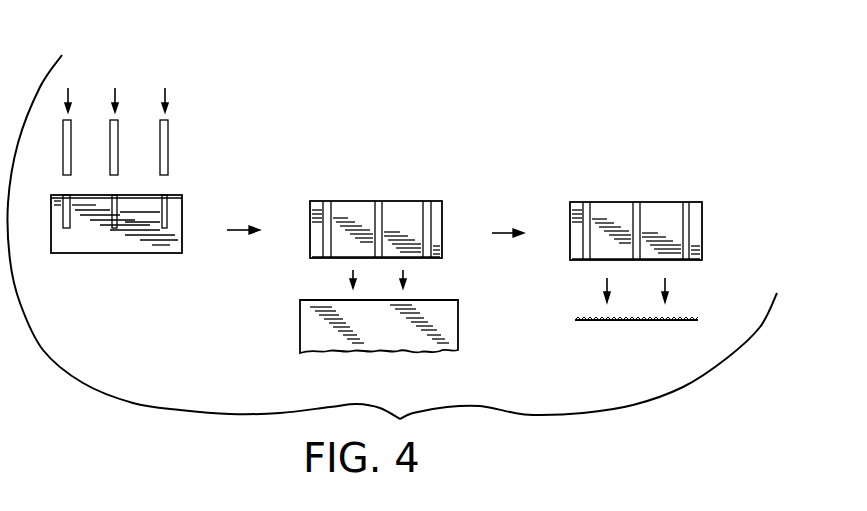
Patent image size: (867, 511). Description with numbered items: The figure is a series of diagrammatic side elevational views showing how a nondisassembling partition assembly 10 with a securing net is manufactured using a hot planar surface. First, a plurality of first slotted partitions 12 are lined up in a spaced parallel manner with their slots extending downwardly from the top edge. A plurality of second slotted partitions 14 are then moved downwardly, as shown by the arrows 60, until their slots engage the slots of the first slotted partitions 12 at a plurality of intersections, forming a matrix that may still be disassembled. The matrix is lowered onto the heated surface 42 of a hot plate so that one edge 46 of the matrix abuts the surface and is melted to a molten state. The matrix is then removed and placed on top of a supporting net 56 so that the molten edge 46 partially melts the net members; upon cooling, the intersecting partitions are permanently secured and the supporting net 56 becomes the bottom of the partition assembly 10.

The arrows 60 is at (158, 92).
The second slotted partitions 14 is at (186, 147).
The first slotted partitions 12 is at (190, 212).
The partition assembly 10 is at (460, 220).
The edge of the matrix 46 is at (429, 259).
The heated surface 42 is at (322, 300).
The supporting net 56 is at (562, 318).